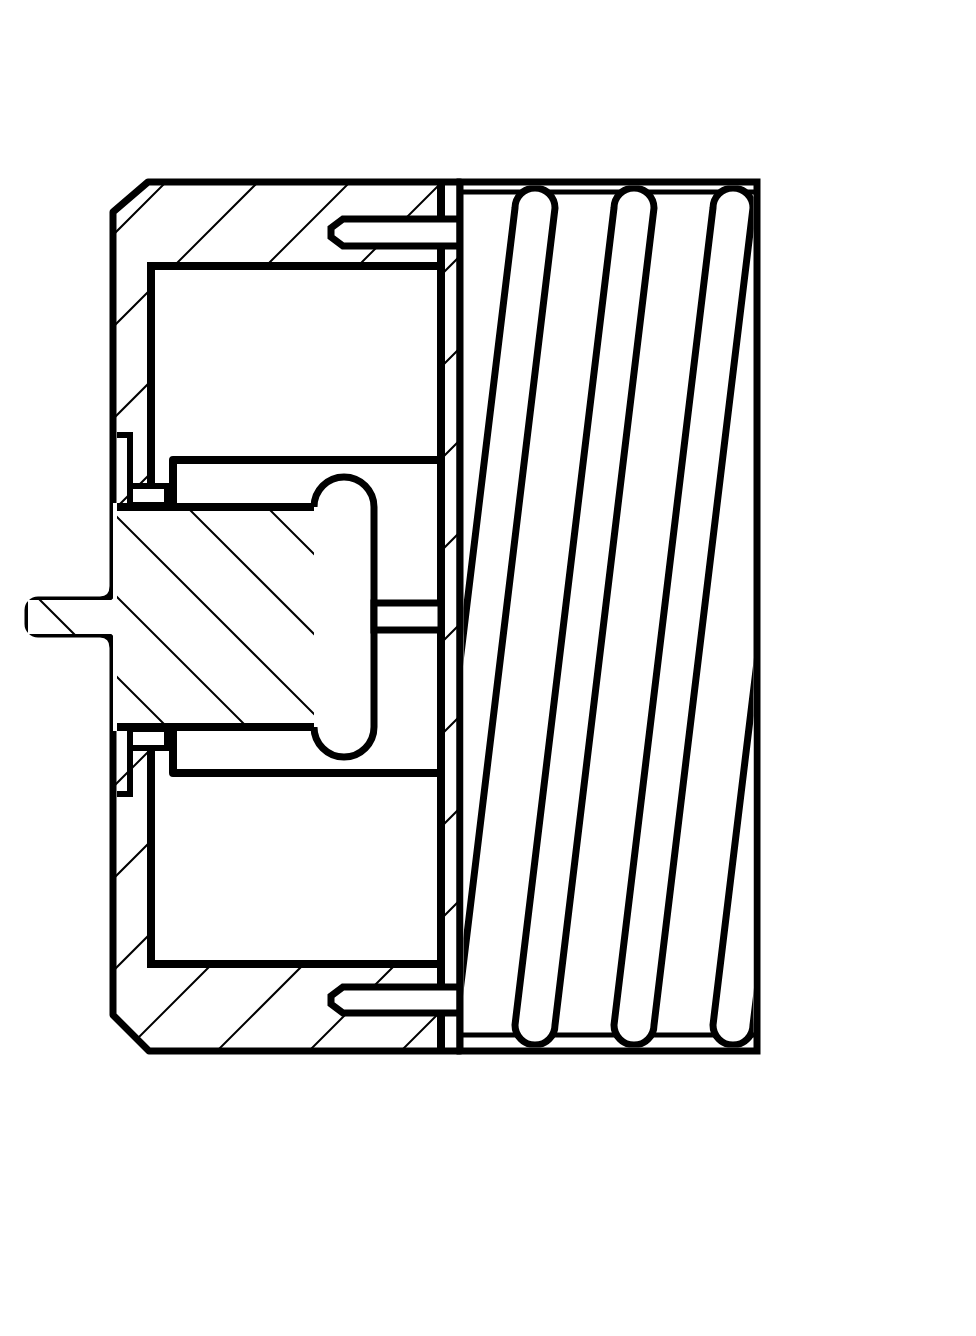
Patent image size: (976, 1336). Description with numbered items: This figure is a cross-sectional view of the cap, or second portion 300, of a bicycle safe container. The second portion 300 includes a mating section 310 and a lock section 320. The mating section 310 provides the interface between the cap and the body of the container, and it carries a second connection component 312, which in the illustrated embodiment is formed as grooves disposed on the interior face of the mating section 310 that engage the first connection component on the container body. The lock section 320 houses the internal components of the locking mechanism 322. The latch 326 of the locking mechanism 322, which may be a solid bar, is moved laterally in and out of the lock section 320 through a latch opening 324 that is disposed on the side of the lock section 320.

The second portion 300 is at (95, 42).
The mating section 310 is at (586, 181).
The second connection component 312 is at (690, 745).
The lock section 320 is at (204, 181).
The locking mechanism 322 is at (433, 782).
The latch opening 324 is at (340, 484).
The latch 326 is at (262, 620).